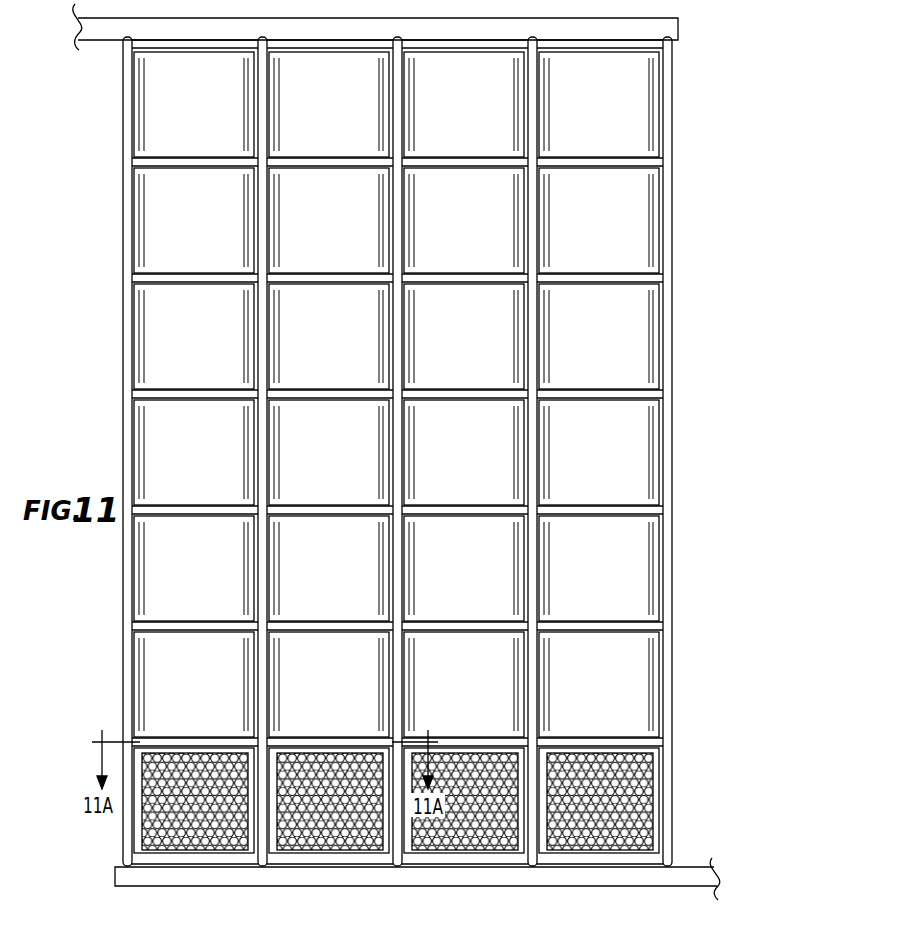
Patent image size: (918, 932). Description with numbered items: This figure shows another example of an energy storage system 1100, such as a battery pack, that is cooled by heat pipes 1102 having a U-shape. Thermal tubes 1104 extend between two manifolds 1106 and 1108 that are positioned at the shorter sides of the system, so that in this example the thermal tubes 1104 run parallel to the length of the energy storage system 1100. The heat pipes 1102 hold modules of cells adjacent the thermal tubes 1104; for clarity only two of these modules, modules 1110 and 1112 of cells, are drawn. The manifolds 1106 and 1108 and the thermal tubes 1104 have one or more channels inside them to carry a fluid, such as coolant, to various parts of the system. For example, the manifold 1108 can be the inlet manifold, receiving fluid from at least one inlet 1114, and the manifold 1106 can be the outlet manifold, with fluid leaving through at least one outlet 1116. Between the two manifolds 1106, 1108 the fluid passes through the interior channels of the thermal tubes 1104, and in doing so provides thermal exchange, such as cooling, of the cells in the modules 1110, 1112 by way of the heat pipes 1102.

The energy storage system 1100 is at (746, 724).
The heat pipes 1102 is at (625, 443).
The thermal tubes 1104 is at (533, 572).
The manifold 1106 is at (460, 37).
The manifold 1108 is at (587, 864).
The module of cells 1110 is at (205, 833).
The module of cells 1112 is at (338, 833).
The inlet 1114 is at (687, 875).
The outlet 1116 is at (108, 30).